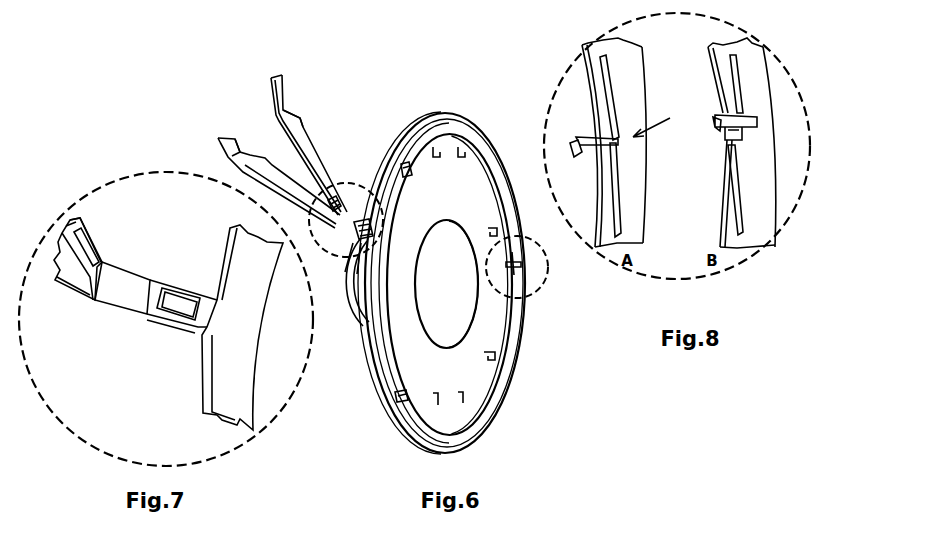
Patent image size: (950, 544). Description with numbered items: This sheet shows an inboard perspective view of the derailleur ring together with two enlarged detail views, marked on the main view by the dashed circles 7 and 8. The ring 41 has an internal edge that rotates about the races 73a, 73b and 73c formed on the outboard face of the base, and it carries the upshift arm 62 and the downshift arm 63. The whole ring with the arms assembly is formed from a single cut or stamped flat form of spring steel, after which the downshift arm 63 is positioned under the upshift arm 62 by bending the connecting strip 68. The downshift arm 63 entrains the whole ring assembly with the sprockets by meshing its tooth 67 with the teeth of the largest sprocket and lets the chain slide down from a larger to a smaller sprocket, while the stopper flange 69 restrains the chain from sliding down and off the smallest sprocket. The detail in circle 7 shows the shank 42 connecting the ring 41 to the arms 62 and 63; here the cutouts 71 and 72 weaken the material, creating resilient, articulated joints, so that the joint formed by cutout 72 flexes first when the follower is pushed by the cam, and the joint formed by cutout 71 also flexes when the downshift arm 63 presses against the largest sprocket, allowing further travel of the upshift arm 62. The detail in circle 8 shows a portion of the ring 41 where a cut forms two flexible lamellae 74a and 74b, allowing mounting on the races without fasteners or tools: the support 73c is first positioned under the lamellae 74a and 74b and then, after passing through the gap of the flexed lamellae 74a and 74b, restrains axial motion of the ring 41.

In FIG. 6, the detail circle (Fig. 7 region) 7 is at (347, 180).
In FIG. 6, the detail circle (Fig. 8 region) 8 is at (539, 297).
In FIG. 7, the ring 41 is at (240, 330).
In FIG. 7, the shank 42 is at (207, 327).
In FIG. 6, the upshift arm 62 is at (333, 221).
In FIG. 7, the upshift arm 62 is at (73, 280).
In FIG. 6, the downshift arm 63 is at (313, 148).
In FIG. 7, the downshift arm 63 is at (82, 219).
In FIG. 6, the tooth 67 is at (297, 120).
In FIG. 7, the connecting strip 68 is at (118, 305).
In FIG. 6, the stopper flange 69 is at (315, 183).
In FIG. 7, the cutout 71 is at (95, 240).
In FIG. 7, the cutout 72 is at (172, 297).
In FIG. 6, the race 73a is at (405, 160).
In FIG. 6, the race 73b is at (397, 397).
In FIG. 6, the race 73c is at (513, 252).
In FIG. 8, the race 73c is at (720, 110).
In FIG. 8, the flexible lamella 74a is at (733, 93).
In FIG. 8, the flexible lamella 74b is at (738, 175).